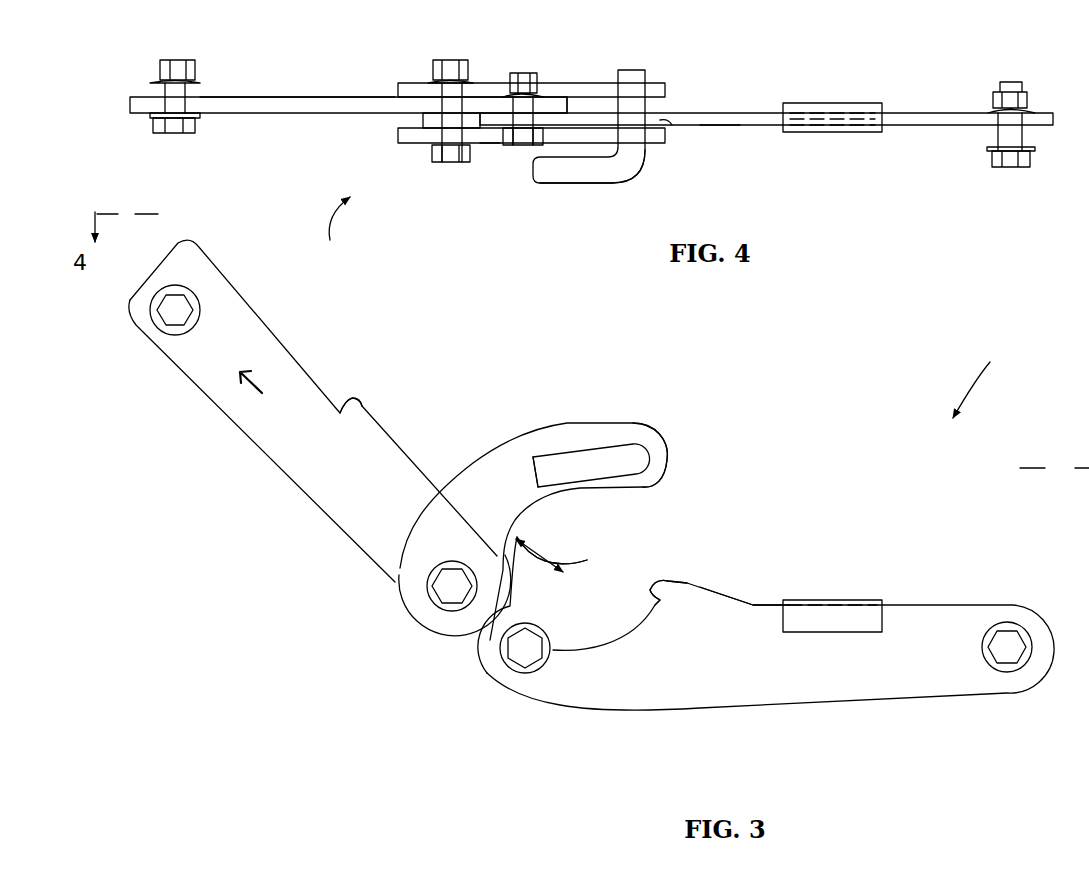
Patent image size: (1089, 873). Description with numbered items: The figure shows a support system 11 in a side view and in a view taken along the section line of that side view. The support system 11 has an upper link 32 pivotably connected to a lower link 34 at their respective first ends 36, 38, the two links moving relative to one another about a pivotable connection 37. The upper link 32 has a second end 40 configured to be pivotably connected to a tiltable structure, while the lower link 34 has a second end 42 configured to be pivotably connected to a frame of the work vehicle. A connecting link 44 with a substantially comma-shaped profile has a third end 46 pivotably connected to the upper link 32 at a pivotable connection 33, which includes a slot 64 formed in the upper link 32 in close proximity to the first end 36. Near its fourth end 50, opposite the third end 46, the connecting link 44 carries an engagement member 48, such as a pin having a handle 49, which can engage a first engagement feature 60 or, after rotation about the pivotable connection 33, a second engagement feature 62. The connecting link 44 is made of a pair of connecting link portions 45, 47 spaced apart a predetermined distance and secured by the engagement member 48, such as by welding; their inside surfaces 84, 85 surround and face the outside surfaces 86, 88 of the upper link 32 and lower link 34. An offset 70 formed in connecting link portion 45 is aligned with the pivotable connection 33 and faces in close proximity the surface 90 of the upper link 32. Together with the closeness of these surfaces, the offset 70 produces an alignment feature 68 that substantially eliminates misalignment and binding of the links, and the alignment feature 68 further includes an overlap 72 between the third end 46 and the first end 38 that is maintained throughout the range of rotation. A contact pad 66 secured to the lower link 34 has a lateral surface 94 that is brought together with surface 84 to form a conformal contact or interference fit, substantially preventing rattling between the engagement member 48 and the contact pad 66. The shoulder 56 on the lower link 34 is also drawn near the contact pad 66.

In FIG. 3, the support system 11 is at (985, 379).
In FIG. 4, the upper link 32 is at (325, 113).
In FIG. 3, the upper link 32 is at (253, 455).
In FIG. 4, the pivotable connection 33 is at (452, 162).
In FIG. 3, the pivotable connection 33 is at (443, 612).
In FIG. 4, the lower link 34 is at (752, 127).
In FIG. 3, the lower link 34 is at (847, 700).
In FIG. 3, the first end 36 is at (478, 673).
In FIG. 3, the pivotable connection 37 is at (551, 652).
In FIG. 3, the first end 38 is at (560, 600).
In FIG. 3, the second end 40 is at (137, 333).
In FIG. 3, the second end 42 is at (1007, 693).
In FIG. 4, the connecting link 44 is at (488, 143).
In FIG. 3, the connecting link 44 is at (475, 465).
In FIG. 4, the connecting link portion 45 is at (418, 143).
In FIG. 3, the third end 46 is at (400, 597).
In FIG. 4, the connecting link portion 47 is at (410, 83).
In FIG. 4, the engagement member 48 is at (645, 76).
In FIG. 3, the engagement member 48 is at (637, 446).
In FIG. 4, the handle 49 is at (582, 183).
In FIG. 3, the handle 49 is at (565, 451).
In FIG. 3, the fourth end 50 is at (660, 430).
In FIG. 3, the shoulder 56 is at (754, 603).
In FIG. 3, the first engagement feature 60 is at (652, 578).
In FIG. 3, the second engagement feature 62 is at (352, 398).
In FIG. 3, the slot 64 is at (456, 548).
In FIG. 4, the contact pad 66 is at (852, 103).
In FIG. 3, the contact pad 66 is at (852, 600).
In FIG. 4, the alignment feature 68 is at (330, 232).
In FIG. 4, the offset 70 is at (423, 118).
In FIG. 3, the overlap 72 is at (563, 568).
In FIG. 4, the inside surface 84 is at (668, 126).
In FIG. 4, the inside surface 85 is at (583, 100).
In FIG. 4, the outside surface 86 is at (275, 97).
In FIG. 4, the outside surface 88 is at (725, 125).
In FIG. 4, the surface 90 is at (270, 113).
In FIG. 4, the lateral surface 94 is at (842, 126).